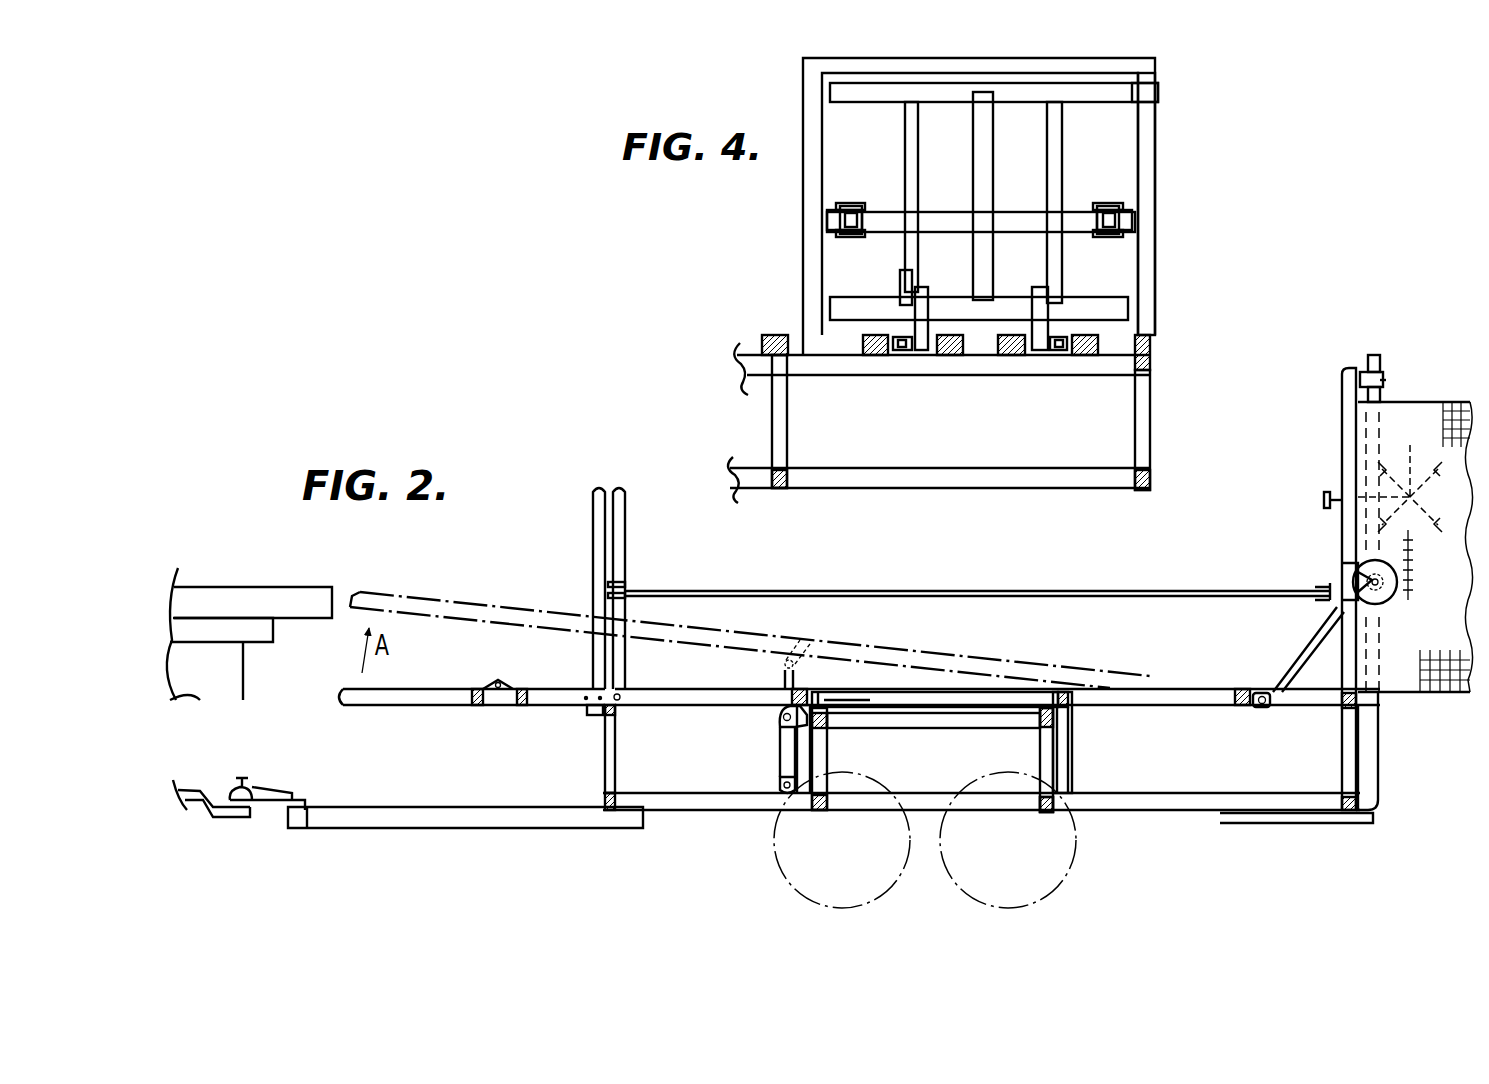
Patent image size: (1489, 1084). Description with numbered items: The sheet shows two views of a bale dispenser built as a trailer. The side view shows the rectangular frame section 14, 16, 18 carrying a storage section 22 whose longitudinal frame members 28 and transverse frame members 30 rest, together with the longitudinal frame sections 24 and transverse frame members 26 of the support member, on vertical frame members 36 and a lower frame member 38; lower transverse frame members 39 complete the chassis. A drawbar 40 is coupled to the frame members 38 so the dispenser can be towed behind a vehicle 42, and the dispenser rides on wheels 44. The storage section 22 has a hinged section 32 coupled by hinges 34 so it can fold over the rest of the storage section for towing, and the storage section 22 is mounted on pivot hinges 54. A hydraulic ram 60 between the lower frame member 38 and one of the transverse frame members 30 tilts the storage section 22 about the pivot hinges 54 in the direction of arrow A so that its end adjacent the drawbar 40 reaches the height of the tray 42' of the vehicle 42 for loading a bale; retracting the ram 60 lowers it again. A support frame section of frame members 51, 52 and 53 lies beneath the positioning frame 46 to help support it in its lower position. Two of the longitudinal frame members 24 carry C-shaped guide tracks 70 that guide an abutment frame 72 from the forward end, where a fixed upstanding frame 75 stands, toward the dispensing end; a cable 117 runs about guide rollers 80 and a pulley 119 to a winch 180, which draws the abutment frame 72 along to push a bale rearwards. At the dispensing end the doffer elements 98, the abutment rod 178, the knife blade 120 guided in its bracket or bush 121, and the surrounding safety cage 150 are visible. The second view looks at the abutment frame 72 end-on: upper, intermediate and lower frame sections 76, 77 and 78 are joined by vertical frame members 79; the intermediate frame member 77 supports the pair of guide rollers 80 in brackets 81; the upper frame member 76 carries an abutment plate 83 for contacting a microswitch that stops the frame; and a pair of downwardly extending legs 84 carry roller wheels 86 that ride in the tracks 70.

In FIG. 2, the rectangular frame section 14 is at (618, 713).
In FIG. 4, the rectangular frame section 16 is at (1150, 357).
In FIG. 2, the rectangular frame section 18 is at (1358, 703).
In FIG. 2, the storage section 22 is at (567, 604).
In FIG. 4, the longitudinal frame sections 24 is at (781, 334).
In FIG. 4, the transverse frame members 26 is at (1113, 363).
In FIG. 2, the longitudinal frame members 28 is at (703, 700).
In FIG. 2, the transverse frame members 30 is at (478, 706).
In FIG. 2, the hinged section 32 is at (421, 710).
In FIG. 2, the hinges 34 is at (498, 683).
In FIG. 4, the vertical frame members 36 is at (783, 425).
In FIG. 2, the vertical frame members 36 is at (610, 778).
In FIG. 4, the lower frame members 38 is at (980, 487).
In FIG. 2, the lower frame members 38 is at (731, 805).
In FIG. 4, the lower transverse frame members 39 is at (780, 490).
In FIG. 2, the lower transverse frame members 39 is at (1047, 810).
In FIG. 2, the drawbar 40 is at (556, 810).
In FIG. 2, the vehicle 42 is at (235, 699).
In FIG. 2, the tray 42' is at (249, 610).
In FIG. 2, the wheels 44 is at (1065, 857).
In FIG. 2, the positioning frame 46 is at (899, 700).
In FIG. 2, the frame member 51 is at (822, 749).
In FIG. 2, the frame member 52 is at (917, 718).
In FIG. 2, the frame member 53 is at (1040, 743).
In FIG. 2, the pivot hinges 54 is at (1260, 708).
In FIG. 2, the hydraulic ram 60 is at (777, 748).
In FIG. 4, the C-shaped guide tracks 70 is at (903, 333).
In FIG. 4, the abutment frame 72 is at (1092, 176).
In FIG. 2, the abutment frame 72 is at (626, 498).
In FIG. 4, the fixed upstanding frame 75 is at (811, 177).
In FIG. 2, the fixed upstanding frame 75 is at (592, 503).
In FIG. 4, the upper frame section 76 is at (944, 88).
In FIG. 4, the intermediate frame member 77 is at (950, 212).
In FIG. 4, the lower frame section 78 is at (956, 300).
In FIG. 4, the vertical frame member 79 is at (907, 134).
In FIG. 4, the guide rollers 80 is at (828, 212).
In FIG. 2, the guide rollers 80 is at (624, 581).
In FIG. 4, the brackets 81 is at (840, 238).
In FIG. 4, the abutment plate 83 is at (1145, 93).
In FIG. 4, the downwardly extending legs 84 is at (921, 353).
In FIG. 4, the roller wheels 86 is at (902, 353).
In FIG. 2, the doffer elements 98 is at (1415, 547).
In FIG. 2, the cable 117 is at (1061, 590).
In FIG. 2, the pulley 119 is at (1322, 585).
In FIG. 2, the knife blade 120 is at (1375, 354).
In FIG. 2, the bracket or bush 121 is at (1393, 372).
In FIG. 2, the safety cage 150 is at (1428, 650).
In FIG. 2, the abutment rod 178 is at (1323, 497).
In FIG. 2, the winch 180 is at (1396, 578).